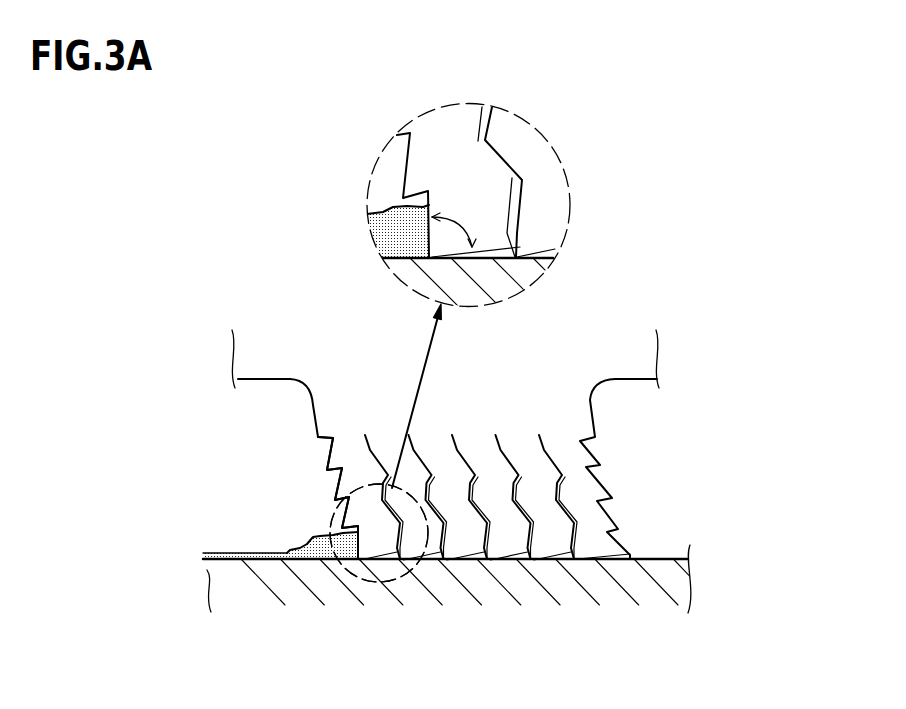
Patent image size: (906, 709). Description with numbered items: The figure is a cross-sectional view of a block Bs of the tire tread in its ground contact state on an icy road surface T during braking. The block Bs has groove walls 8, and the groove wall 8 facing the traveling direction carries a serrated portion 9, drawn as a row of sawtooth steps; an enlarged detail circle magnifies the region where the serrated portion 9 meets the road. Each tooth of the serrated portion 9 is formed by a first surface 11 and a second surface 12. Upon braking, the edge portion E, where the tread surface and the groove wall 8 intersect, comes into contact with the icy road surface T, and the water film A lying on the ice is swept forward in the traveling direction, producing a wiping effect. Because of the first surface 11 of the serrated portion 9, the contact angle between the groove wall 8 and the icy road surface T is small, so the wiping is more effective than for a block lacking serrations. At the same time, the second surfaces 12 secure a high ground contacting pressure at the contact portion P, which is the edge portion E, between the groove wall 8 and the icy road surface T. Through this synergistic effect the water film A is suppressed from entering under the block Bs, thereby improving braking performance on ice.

The groove wall 8 is at (302, 479).
The serrated portion 9 is at (271, 496).
The first surface 11 is at (427, 235).
The second surface 12 is at (401, 199).
The water film A is at (318, 546).
The icy road surface T is at (227, 558).
The contact portion P is at (358, 559).
The edge portion E is at (365, 585).
The block Bs is at (516, 401).